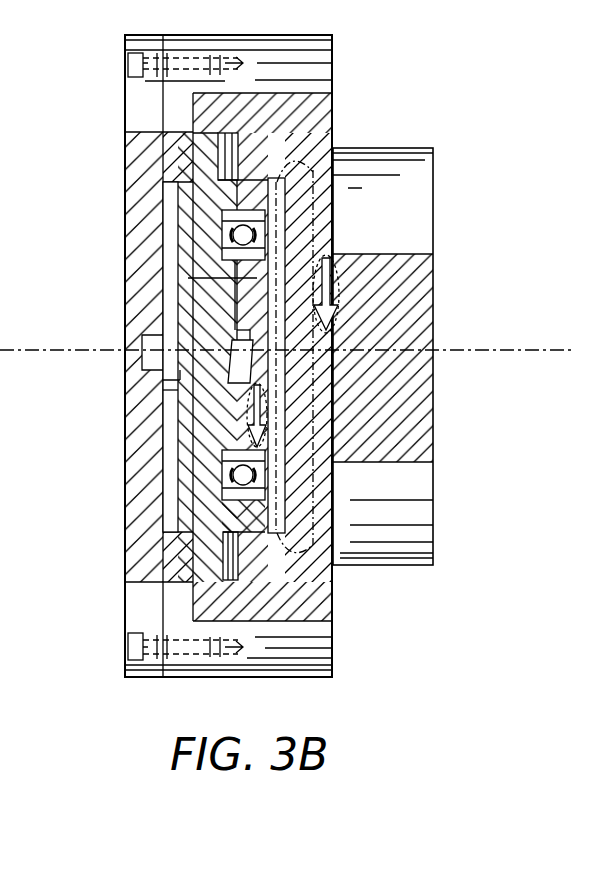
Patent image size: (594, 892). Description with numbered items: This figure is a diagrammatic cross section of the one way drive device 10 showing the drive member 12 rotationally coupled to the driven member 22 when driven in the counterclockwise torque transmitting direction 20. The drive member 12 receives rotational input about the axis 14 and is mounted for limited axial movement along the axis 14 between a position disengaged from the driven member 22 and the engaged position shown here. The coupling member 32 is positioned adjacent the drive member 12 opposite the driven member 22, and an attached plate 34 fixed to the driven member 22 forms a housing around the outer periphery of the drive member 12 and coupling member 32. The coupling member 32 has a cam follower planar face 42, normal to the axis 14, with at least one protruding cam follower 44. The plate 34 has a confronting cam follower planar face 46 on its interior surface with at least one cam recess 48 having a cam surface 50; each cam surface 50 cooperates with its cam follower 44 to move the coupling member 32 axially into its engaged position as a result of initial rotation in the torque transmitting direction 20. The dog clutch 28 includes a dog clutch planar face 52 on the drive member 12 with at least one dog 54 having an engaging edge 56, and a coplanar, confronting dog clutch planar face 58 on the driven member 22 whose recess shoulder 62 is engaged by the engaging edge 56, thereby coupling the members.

The one way drive device 10 is at (440, 72).
The drive member 12 is at (193, 275).
The axis 14 is at (512, 350).
The counterclockwise torque transmitting direction 20 is at (330, 478).
The driven member 22 is at (382, 212).
The dog clutch 28 is at (333, 590).
The coupling member 32 is at (210, 527).
The attached plate 34 is at (140, 428).
The cam follower planar face 42 is at (185, 200).
The cam follower 44 is at (165, 380).
The cam follower planar face 46 is at (167, 230).
The cam recess 48 is at (158, 338).
The cam surface 50 is at (160, 395).
The dog clutch planar face 52 is at (300, 230).
The dog 54 is at (302, 310).
The engaging edge 56 is at (290, 412).
The dog clutch planar face 58 is at (318, 150).
The shoulder 62 is at (285, 398).